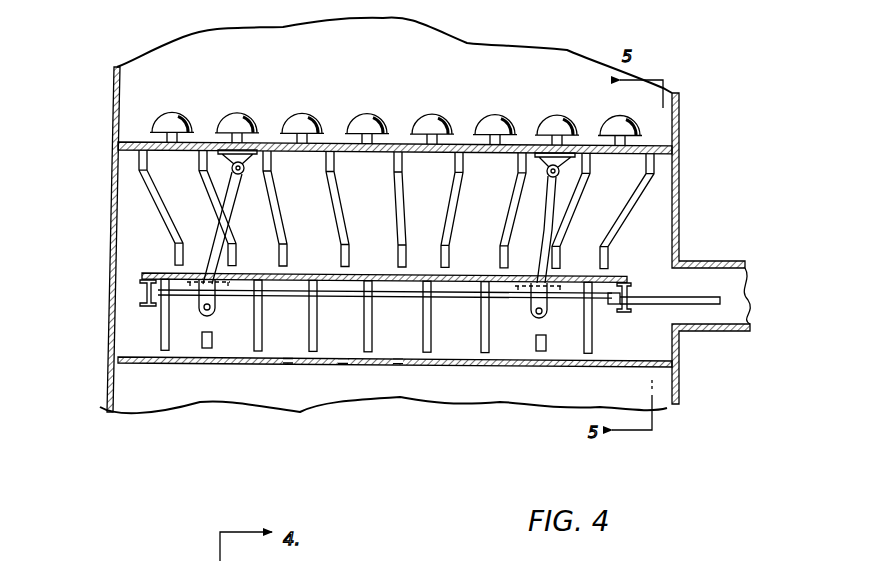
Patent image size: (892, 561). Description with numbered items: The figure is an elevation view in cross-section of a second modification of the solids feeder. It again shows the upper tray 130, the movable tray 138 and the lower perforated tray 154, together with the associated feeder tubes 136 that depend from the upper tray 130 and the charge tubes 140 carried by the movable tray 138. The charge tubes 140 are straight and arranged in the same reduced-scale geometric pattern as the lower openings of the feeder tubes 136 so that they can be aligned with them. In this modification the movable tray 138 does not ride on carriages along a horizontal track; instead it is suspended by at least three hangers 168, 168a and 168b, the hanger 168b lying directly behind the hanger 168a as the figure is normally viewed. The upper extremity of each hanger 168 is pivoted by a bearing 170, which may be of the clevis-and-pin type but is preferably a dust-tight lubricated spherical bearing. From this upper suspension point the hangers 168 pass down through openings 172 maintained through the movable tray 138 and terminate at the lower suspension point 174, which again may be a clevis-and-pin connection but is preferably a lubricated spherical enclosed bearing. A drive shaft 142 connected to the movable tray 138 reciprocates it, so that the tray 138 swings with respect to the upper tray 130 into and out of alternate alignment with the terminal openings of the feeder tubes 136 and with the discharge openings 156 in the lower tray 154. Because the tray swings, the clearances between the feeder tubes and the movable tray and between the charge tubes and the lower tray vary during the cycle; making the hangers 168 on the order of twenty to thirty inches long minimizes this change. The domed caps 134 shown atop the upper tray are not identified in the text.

The upper tray 130 is at (680, 147).
The domed caps 134 is at (500, 114).
The feeder tubes 136 is at (205, 180).
The movable tray 138 is at (145, 290).
The charge tubes 140 is at (258, 343).
The drive shaft 142 is at (672, 300).
The lower perforated tray 154 is at (165, 366).
The discharge openings 156 is at (397, 370).
The hangers 168 is at (230, 212).
The hanger 168a is at (586, 196).
The hanger 168b is at (553, 232).
The bearing 170 is at (243, 157).
The openings 172 is at (200, 270).
The lower suspension point 174 is at (540, 318).